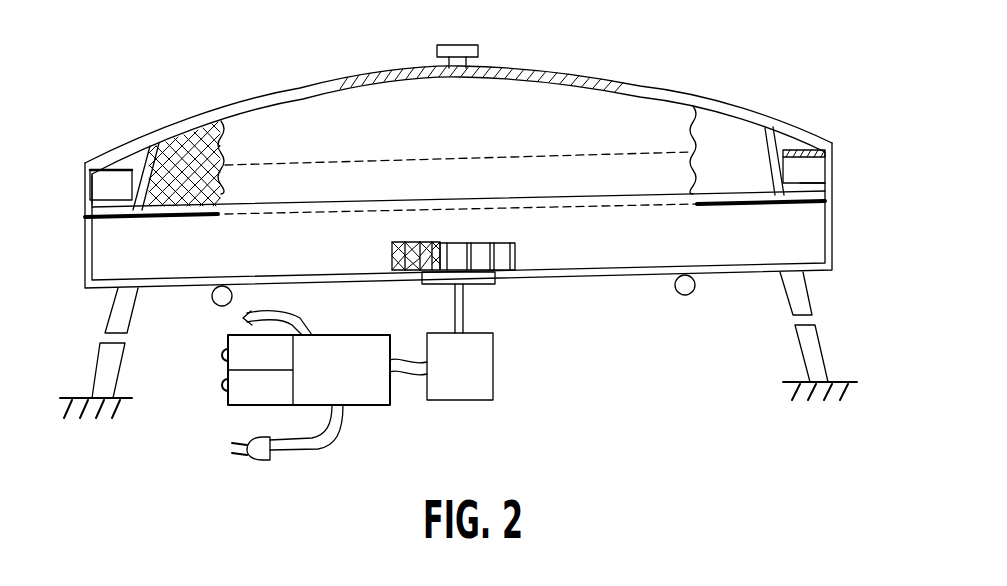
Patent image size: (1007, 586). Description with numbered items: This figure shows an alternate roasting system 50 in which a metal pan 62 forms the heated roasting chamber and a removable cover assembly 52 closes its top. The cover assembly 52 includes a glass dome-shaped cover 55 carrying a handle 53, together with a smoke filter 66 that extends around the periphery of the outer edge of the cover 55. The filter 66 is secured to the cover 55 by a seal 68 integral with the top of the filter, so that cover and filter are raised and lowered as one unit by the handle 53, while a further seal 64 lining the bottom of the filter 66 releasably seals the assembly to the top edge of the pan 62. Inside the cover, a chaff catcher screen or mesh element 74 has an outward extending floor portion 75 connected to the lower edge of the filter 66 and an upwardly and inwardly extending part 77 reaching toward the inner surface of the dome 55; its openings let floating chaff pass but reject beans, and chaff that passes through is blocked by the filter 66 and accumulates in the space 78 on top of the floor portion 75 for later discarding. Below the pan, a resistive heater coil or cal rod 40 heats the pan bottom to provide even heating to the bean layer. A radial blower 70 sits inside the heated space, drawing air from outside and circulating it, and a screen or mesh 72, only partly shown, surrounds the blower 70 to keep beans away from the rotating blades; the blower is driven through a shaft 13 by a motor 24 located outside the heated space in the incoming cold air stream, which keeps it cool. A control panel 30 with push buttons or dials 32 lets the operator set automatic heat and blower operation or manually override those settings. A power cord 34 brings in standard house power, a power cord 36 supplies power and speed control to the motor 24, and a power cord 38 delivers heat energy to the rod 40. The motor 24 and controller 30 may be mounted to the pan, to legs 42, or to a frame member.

The drive shaft 13 is at (477, 275).
The motor 24 is at (493, 378).
The control panel 30 is at (369, 416).
The push buttons or dials 32 is at (222, 385).
The power cord 34 is at (298, 453).
The power cord 36 is at (403, 378).
The power cord 38 is at (330, 320).
The resistive heater coil or cal rod 40 is at (673, 296).
The legs 42 is at (815, 350).
The alternate system 50 is at (615, 49).
The cover assembly 52 is at (266, 87).
The handle 53 is at (440, 45).
The glass dome-shaped cover 55 is at (345, 78).
The metal pan 62 is at (832, 238).
The seal 64 is at (180, 219).
The smoke filter 66 is at (85, 178).
The seal 68 is at (793, 153).
The radial blower 70 is at (515, 255).
The screen or mesh 72 is at (392, 255).
The chaff catcher screen or mesh element 74 is at (728, 115).
The floor portion 75 is at (808, 181).
The upwardly and inwardly extending part 77 is at (772, 114).
The space 78 is at (103, 192).